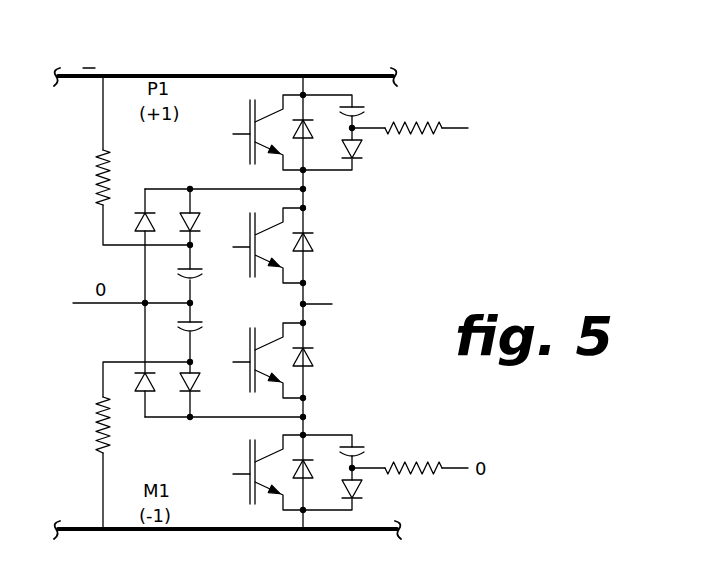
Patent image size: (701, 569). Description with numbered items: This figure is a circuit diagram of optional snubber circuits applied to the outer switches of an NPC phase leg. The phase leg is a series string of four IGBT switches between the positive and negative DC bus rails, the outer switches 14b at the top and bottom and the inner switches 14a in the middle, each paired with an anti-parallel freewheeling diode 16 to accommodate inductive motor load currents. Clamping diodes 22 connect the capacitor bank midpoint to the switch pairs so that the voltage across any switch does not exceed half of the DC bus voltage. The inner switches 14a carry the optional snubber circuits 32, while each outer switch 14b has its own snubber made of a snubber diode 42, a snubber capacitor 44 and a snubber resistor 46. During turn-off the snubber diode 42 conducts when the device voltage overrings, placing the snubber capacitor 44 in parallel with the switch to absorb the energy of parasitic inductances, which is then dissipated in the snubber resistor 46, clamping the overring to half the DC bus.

The inner switches 14a is at (234, 229).
The outer switches 14b is at (236, 113).
The freewheeling diodes 16 is at (313, 130).
The clamping diodes 22 is at (137, 216).
The snubber circuits 32 is at (120, 431).
The snubber diode 42 is at (365, 106).
The snubber capacitor 44 is at (358, 152).
The snubber resistor 46 is at (436, 128).